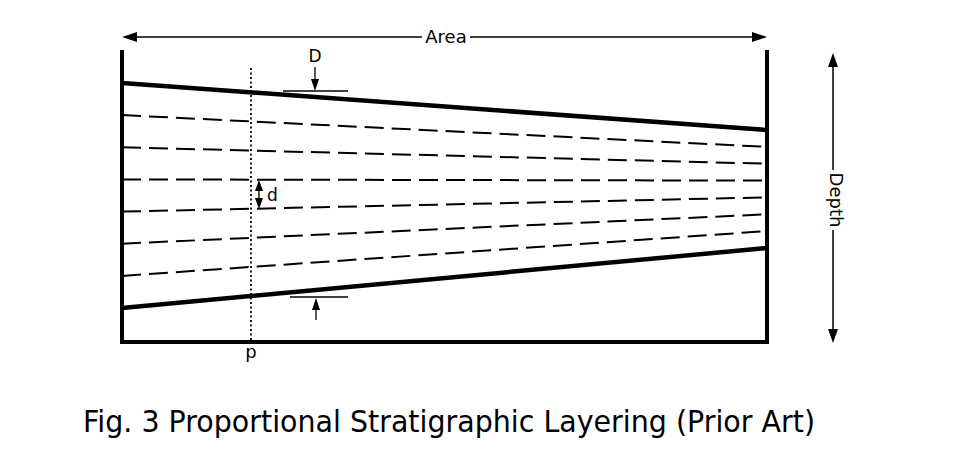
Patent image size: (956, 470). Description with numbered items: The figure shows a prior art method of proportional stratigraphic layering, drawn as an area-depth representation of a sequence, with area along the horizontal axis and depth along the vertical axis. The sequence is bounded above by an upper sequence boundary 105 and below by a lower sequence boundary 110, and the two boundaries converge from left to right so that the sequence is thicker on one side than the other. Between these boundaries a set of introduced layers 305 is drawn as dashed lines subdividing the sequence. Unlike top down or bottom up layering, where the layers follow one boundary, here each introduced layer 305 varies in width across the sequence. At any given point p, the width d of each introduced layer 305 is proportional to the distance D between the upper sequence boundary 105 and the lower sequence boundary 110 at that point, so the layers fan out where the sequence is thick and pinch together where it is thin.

The upper sequence boundary 105 is at (388, 101).
The lower sequence boundary 110 is at (388, 284).
The introduced layer 305 is at (135, 195).